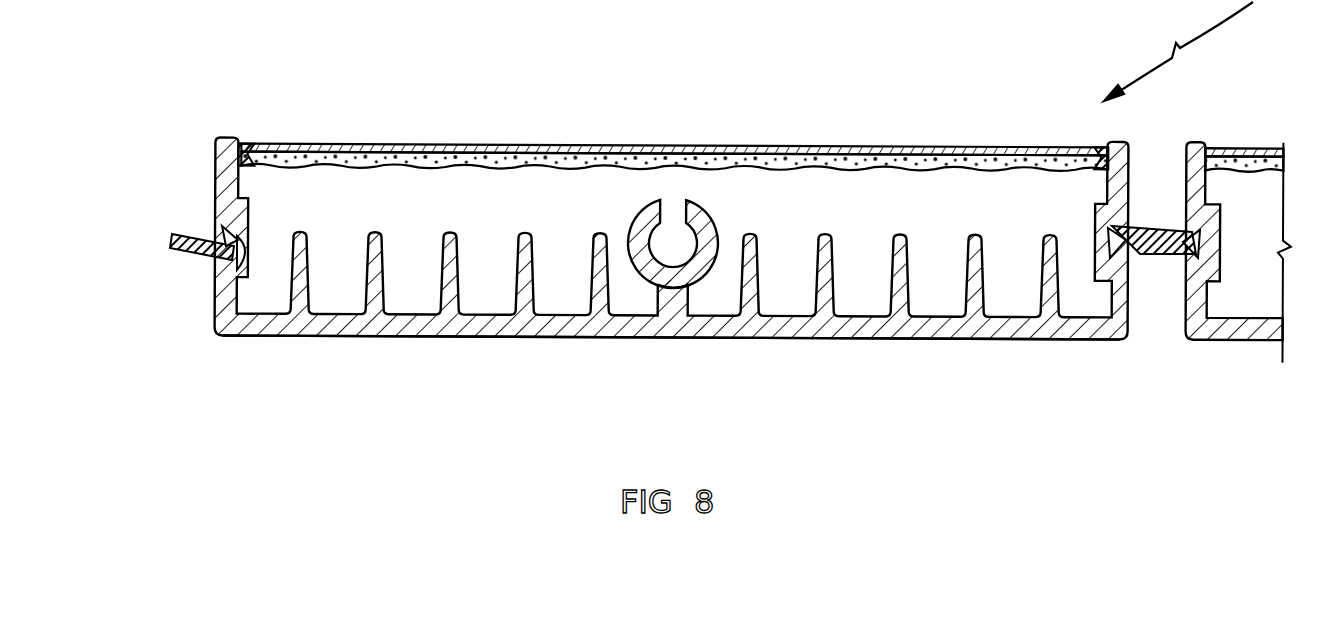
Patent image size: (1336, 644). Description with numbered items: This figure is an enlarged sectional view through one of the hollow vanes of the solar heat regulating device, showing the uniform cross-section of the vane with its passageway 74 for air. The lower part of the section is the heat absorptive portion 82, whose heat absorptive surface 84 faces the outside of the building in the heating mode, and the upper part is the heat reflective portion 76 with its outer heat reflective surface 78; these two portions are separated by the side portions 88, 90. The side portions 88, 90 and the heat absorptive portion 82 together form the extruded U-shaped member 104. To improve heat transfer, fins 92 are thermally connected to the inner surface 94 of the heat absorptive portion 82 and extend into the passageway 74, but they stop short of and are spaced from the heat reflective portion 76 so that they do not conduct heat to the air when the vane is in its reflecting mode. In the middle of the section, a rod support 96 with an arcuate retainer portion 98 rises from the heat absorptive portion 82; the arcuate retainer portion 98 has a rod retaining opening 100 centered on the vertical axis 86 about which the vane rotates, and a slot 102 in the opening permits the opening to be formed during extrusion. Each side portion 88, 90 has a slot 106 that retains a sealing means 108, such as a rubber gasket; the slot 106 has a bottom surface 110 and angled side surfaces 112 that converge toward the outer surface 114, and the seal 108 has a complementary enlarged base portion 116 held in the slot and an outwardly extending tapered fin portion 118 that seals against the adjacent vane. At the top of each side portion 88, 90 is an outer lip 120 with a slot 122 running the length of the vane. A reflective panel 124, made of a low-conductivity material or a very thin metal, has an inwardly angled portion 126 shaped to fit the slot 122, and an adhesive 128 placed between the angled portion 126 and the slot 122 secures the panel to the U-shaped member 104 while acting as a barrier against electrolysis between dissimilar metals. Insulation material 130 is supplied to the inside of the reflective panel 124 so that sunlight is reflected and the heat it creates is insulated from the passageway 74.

The passageway 74 is at (552, 200).
The heat reflective portion 76 is at (880, 150).
The outer heat reflective surface 78 is at (832, 147).
The heat absorptive portion 82 is at (1017, 320).
The heat absorptive surface 84 is at (1077, 339).
The vertical axis 86 is at (695, 205).
The side portion 88 is at (1100, 318).
The side portion 90 is at (218, 318).
The fins 92 is at (363, 285).
The inner surface 94 is at (318, 315).
The rod support 96 is at (657, 288).
The arcuate retainer portion 98 is at (675, 262).
The rod retaining opening 100 is at (640, 252).
The slot 102 is at (670, 235).
The U-shaped member 104 is at (1132, 300).
The slots 106 is at (1127, 223).
The sealing means 108 is at (165, 249).
The bottom surface 110 is at (217, 275).
The angled side surfaces 112 is at (215, 254).
The outer surface 114 is at (220, 303).
The enlarged base portion 116 is at (220, 232).
The tapered fin portion 118 is at (180, 237).
The outer lip 120 is at (227, 137).
The slot 122 is at (238, 137).
The reflective panel 124 is at (424, 147).
The inwardly angled portion 126 is at (270, 147).
The adhesive 128 is at (243, 148).
The insulation material 130 is at (495, 160).